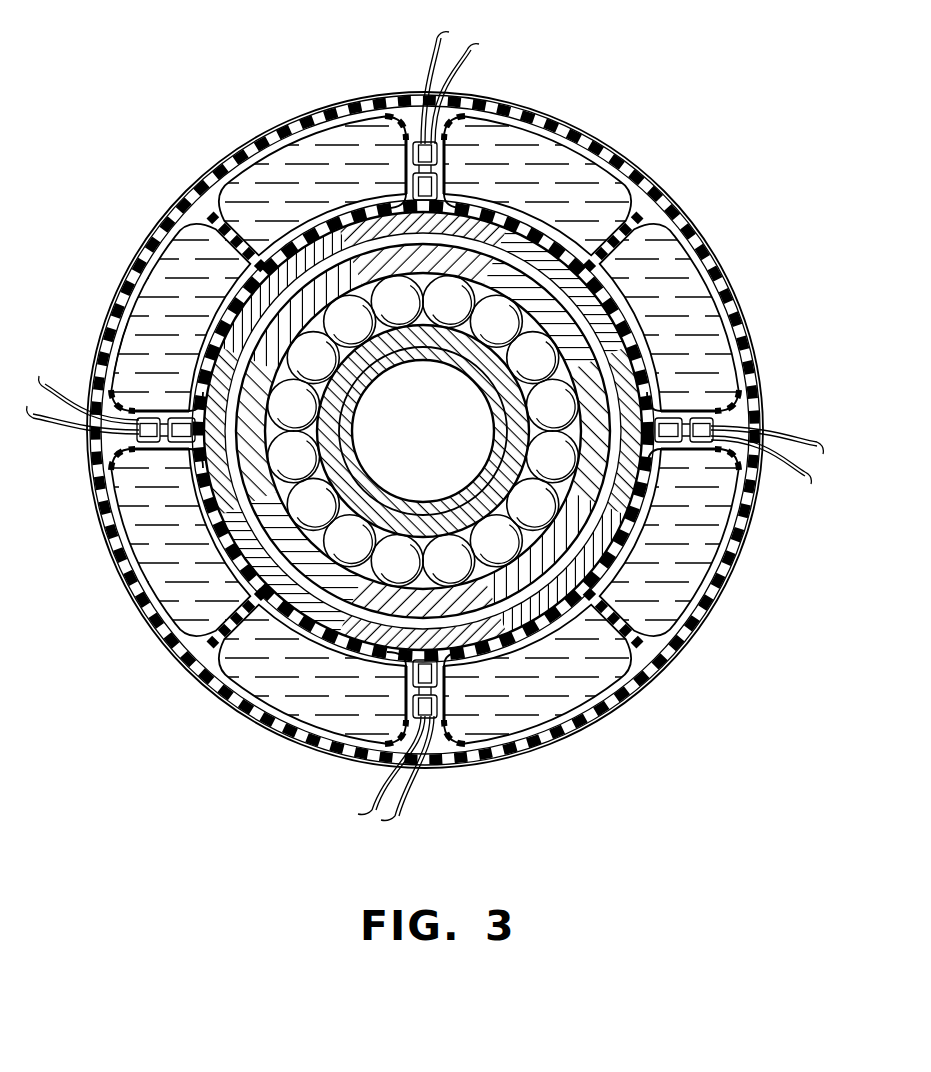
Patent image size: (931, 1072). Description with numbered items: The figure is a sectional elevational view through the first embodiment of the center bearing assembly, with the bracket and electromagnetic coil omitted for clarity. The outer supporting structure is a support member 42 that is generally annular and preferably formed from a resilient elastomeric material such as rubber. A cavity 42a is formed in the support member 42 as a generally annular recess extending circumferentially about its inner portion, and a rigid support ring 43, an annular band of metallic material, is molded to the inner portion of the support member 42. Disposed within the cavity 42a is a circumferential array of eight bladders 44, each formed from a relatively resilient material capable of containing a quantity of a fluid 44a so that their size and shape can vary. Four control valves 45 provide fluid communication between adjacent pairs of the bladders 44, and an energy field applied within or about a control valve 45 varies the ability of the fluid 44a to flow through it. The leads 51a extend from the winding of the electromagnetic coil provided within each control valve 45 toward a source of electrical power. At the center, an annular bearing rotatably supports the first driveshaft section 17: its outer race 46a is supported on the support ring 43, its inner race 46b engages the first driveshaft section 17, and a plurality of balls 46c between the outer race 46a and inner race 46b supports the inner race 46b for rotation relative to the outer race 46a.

The first driveshaft section 17 is at (362, 388).
The support member 42 is at (232, 708).
The cavity 42a is at (250, 668).
The support ring 43 is at (205, 515).
The bladder 44 is at (320, 110).
The fluid 44a is at (303, 150).
The control valve 45 is at (440, 178).
The outer race 46a is at (118, 368).
The inner race 46b is at (500, 480).
The balls 46c is at (335, 298).
The lead 51a is at (440, 85).